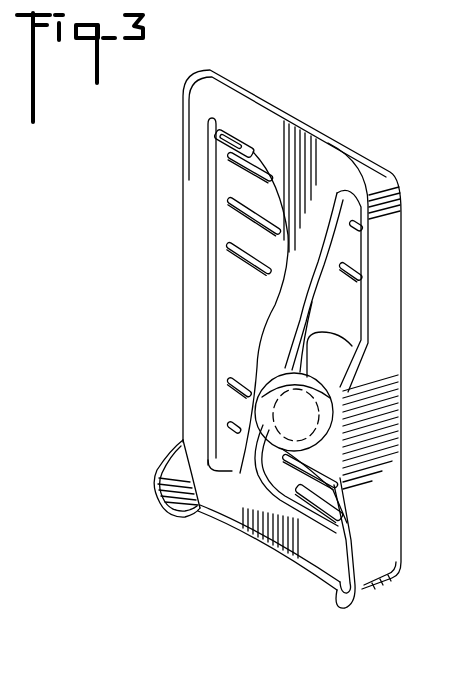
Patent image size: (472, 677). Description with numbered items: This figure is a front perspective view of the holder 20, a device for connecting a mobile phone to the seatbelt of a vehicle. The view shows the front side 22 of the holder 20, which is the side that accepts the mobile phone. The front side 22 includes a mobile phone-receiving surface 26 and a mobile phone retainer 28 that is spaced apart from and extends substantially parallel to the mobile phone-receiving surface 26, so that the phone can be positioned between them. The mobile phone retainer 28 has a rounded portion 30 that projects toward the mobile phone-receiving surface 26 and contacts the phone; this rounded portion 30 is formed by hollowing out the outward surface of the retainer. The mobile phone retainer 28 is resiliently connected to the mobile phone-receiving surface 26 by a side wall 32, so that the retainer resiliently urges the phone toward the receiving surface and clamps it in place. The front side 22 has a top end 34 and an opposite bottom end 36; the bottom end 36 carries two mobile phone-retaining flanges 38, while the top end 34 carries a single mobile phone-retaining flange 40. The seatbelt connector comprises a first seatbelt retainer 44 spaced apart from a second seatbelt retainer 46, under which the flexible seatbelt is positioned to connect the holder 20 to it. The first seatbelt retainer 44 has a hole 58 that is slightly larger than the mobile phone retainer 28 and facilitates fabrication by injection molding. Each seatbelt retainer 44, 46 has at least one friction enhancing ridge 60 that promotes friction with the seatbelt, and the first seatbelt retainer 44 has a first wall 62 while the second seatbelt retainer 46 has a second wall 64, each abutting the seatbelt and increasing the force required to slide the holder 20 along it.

The holder 20 is at (393, 137).
The front side 22 is at (163, 266).
The mobile phone-receiving surface 26 is at (235, 130).
The mobile phone retainer 28 is at (330, 413).
The rounded portion 30 is at (300, 427).
The side wall 32 is at (378, 448).
The top end 34 is at (306, 125).
The bottom end 36 is at (290, 562).
The mobile phone-retaining flange 38 is at (188, 503).
The mobile phone-retaining flange 40 is at (383, 193).
The first seatbelt retainer 44 is at (343, 317).
The second seatbelt retainer 46 is at (240, 290).
The hole 58 is at (333, 363).
The friction enhancing ridge 60 is at (273, 179).
The first wall 62 is at (333, 523).
The second wall 64 is at (220, 143).